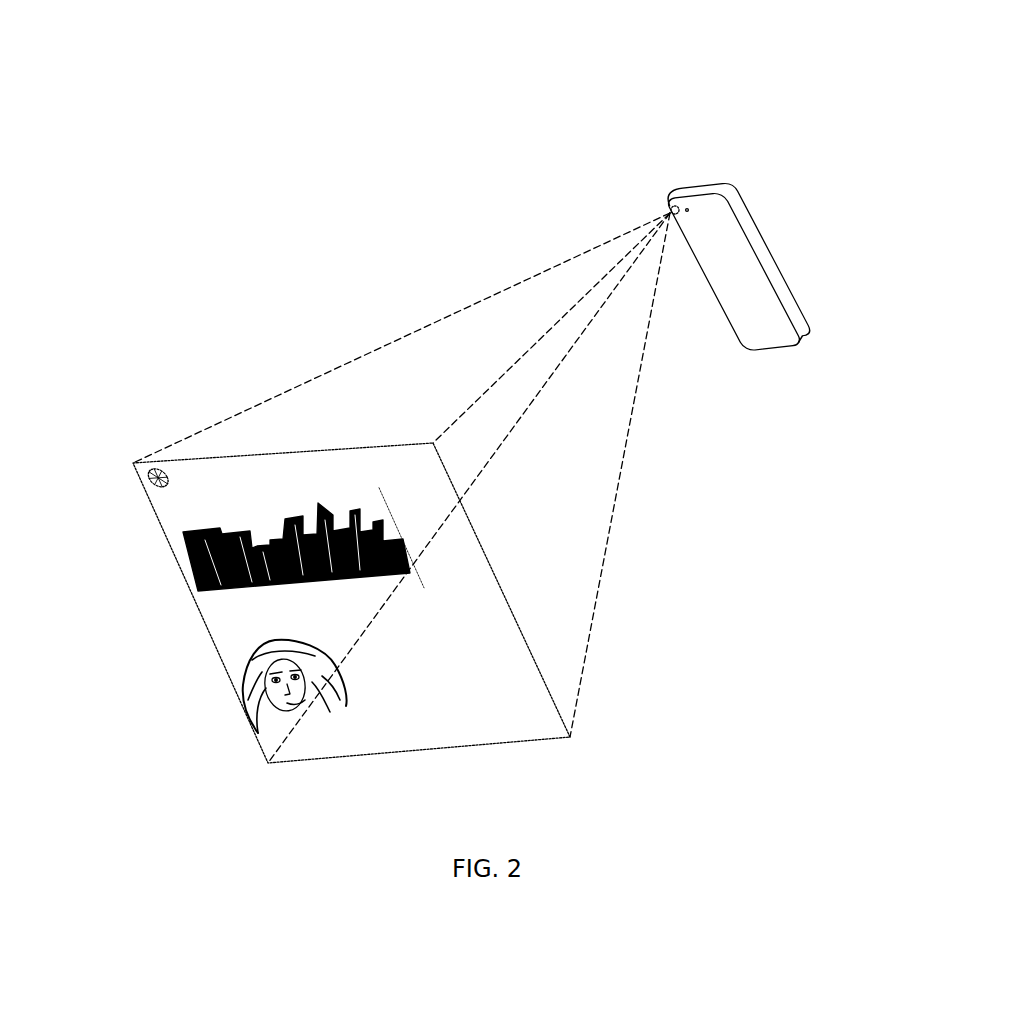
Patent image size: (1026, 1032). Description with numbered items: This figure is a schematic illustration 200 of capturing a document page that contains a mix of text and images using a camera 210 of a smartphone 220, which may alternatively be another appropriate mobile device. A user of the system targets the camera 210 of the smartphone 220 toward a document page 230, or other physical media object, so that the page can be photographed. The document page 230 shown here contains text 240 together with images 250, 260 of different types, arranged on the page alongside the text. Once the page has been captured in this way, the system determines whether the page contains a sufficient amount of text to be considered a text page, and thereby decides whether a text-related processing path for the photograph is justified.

The schematic illustration 200 is at (993, 122).
The camera 210 is at (677, 203).
The smartphone 220 is at (753, 200).
The document page 230 is at (138, 506).
The text 240 is at (490, 627).
The image 250 is at (238, 697).
The image 260 is at (187, 575).